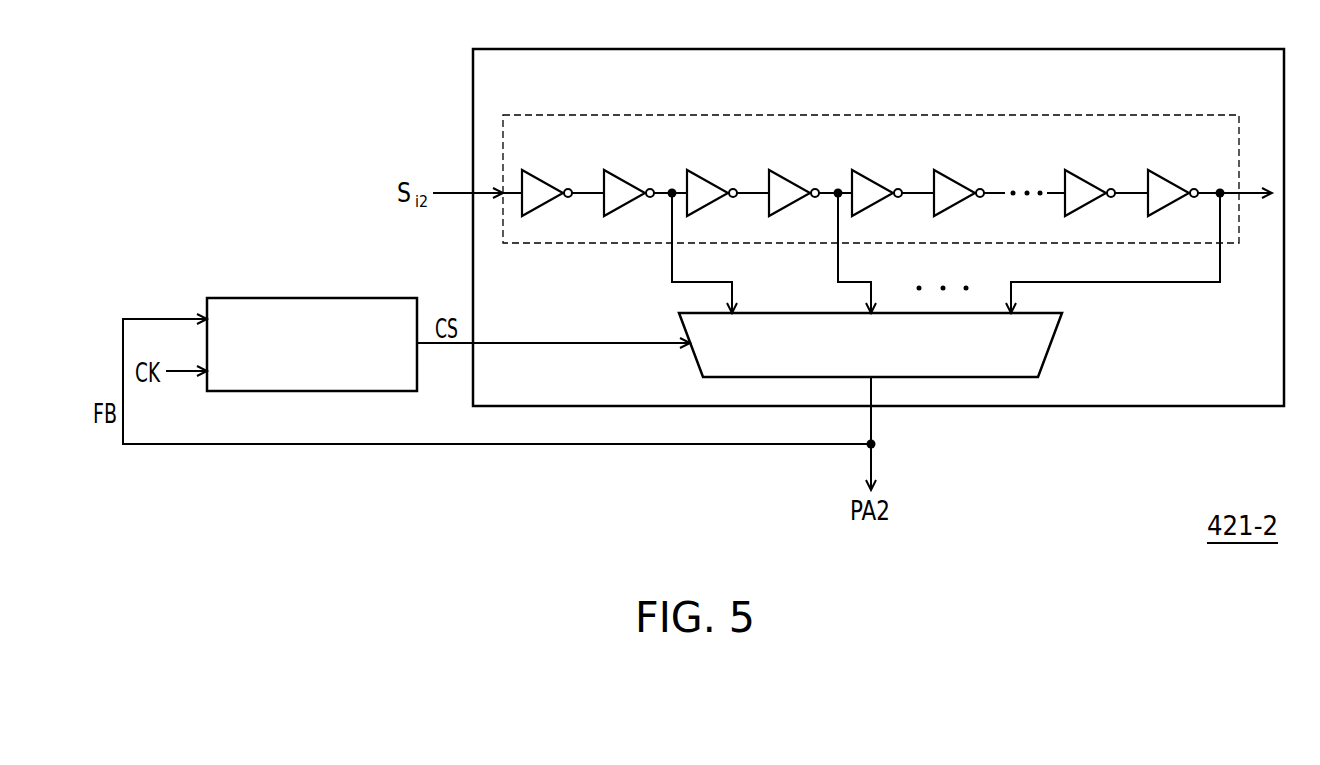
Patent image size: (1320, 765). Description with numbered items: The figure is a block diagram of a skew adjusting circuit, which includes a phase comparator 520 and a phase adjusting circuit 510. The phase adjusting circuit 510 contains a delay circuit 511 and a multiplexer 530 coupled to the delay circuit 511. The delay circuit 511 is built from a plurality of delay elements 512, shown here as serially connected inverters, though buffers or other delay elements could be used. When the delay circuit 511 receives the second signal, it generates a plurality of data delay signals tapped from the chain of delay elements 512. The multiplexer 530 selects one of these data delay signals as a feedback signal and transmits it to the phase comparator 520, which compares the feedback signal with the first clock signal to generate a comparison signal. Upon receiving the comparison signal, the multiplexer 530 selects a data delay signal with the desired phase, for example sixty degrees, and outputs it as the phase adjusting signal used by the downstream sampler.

The phase adjusting circuit 510 is at (1059, 49).
The delay circuit 511 is at (1059, 115).
The delay elements 512 is at (860, 174).
The phase comparator 520 is at (395, 298).
The multiplexer 530 is at (1053, 347).